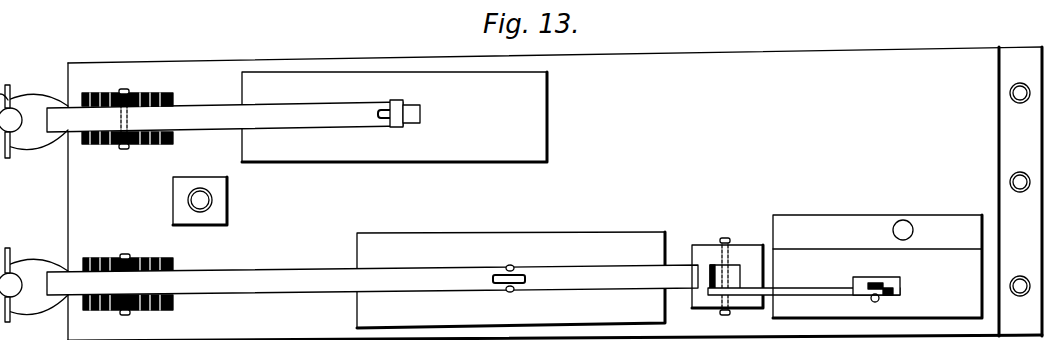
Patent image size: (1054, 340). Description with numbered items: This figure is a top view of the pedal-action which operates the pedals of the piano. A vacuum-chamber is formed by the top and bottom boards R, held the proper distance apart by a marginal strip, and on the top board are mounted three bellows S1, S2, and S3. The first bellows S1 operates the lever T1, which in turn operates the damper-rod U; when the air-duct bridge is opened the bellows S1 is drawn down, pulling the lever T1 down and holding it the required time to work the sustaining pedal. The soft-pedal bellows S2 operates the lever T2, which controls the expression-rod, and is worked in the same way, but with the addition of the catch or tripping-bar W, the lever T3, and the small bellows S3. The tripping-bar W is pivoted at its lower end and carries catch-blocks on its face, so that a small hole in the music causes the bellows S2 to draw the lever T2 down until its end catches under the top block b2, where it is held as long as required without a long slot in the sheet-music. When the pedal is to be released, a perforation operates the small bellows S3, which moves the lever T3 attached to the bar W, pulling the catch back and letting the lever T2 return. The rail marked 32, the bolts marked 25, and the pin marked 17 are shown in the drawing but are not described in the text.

The top and bottom boards R is at (555, 193).
The rail 32 is at (1020, 191).
The bellows S1 is at (394, 117).
The lever T1 is at (233, 116).
The damper-rod U is at (12, 112).
The clamp bolt 25 is at (127, 210).
The bellows S2 is at (511, 280).
The lever T2 is at (372, 280).
The catch or tripping-bar W is at (731, 272).
The catch-block b2 is at (716, 262).
The lever T3 is at (812, 286).
The bellows S3 is at (814, 256).
The pin 17 is at (901, 221).